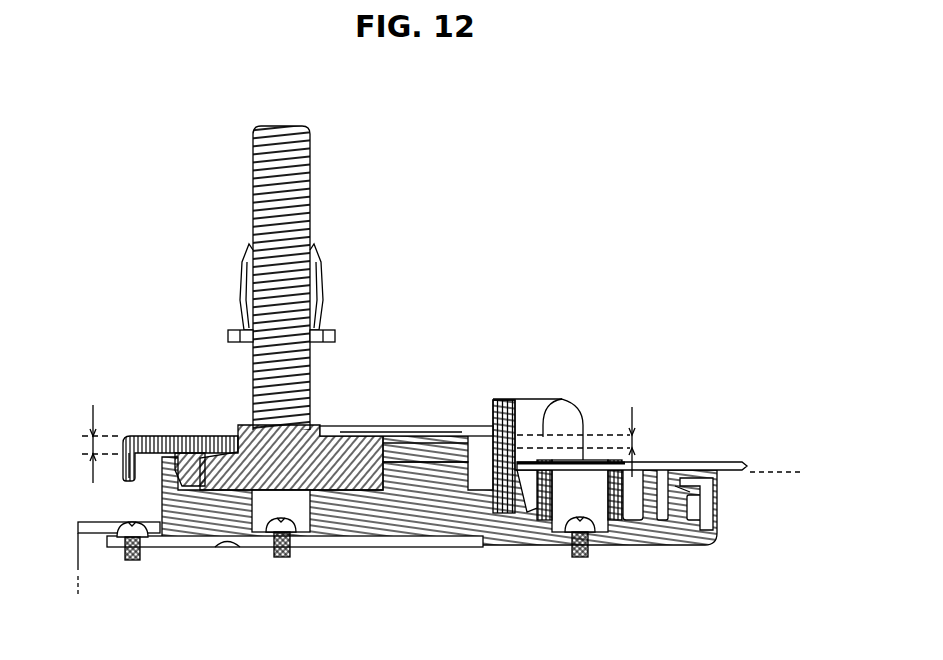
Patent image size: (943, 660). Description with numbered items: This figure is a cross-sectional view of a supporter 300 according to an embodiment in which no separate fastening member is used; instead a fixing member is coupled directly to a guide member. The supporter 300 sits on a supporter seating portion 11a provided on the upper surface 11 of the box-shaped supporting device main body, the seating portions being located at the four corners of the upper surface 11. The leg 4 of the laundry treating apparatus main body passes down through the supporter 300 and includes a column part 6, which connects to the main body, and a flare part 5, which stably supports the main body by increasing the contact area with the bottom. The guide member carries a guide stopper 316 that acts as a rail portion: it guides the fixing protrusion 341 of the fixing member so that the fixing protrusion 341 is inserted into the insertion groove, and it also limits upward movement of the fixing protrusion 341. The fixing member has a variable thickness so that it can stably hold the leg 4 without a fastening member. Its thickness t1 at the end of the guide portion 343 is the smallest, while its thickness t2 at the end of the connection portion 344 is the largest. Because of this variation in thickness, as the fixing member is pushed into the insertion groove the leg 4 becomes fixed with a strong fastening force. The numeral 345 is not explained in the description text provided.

The supporter 300 is at (493, 182).
The upper surface 11 is at (763, 471).
The supporter seating portion 11a is at (212, 546).
The leg 4 is at (397, 368).
The flare part 5 is at (368, 428).
The column part 6 is at (305, 370).
The guide stopper 316 is at (415, 430).
The fixing protrusion 341 is at (468, 426).
The guide portion 343 is at (562, 399).
The connection portion 344 is at (168, 436).
The engagement tab 345 is at (123, 478).
The thickness t1 is at (640, 441).
The thickness t2 is at (90, 443).